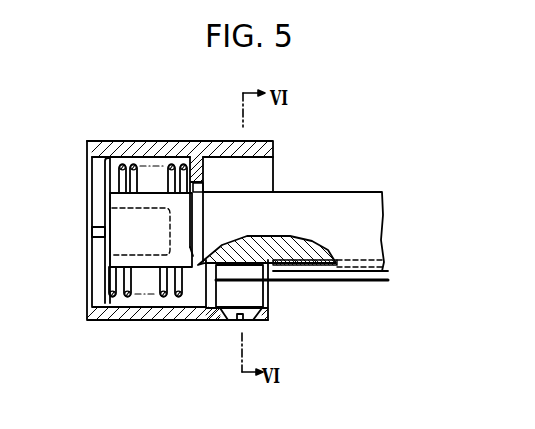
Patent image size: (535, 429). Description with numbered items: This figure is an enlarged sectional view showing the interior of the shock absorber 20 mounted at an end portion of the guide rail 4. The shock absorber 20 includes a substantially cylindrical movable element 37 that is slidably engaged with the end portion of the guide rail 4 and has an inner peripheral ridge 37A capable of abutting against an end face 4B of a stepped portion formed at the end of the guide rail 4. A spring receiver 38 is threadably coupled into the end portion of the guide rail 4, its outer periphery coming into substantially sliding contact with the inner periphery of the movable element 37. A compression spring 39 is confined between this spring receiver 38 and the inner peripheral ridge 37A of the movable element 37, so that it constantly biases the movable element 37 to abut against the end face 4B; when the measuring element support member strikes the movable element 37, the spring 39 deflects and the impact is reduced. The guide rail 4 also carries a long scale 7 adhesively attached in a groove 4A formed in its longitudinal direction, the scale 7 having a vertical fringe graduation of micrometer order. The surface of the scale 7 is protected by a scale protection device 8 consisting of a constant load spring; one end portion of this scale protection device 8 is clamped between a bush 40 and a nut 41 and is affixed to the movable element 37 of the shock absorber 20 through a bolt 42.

The guide rail 4 is at (343, 207).
The groove 4A is at (318, 266).
The end face of stepped portion 4B is at (194, 188).
The scale 7 is at (330, 273).
The scale protection device 8 is at (370, 282).
The shock absorber 20 is at (92, 324).
The movable element 37 is at (122, 152).
The inner peripheral ridge 37A is at (196, 164).
The spring receiver 38 is at (99, 175).
The compression spring 39 is at (121, 300).
The bush 40 is at (257, 292).
The nut 41 is at (253, 268).
The bolt 42 is at (232, 321).